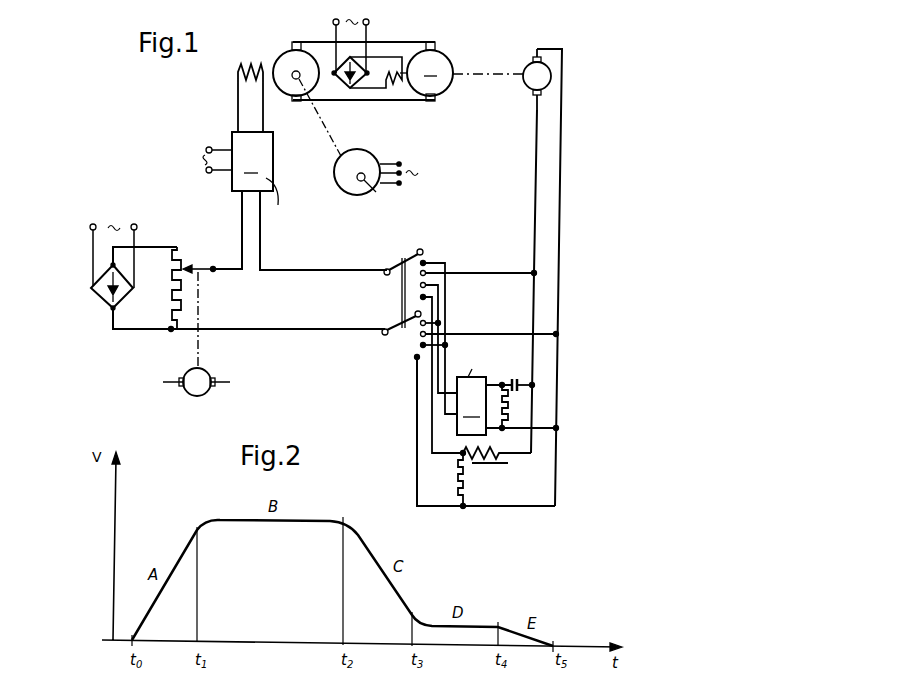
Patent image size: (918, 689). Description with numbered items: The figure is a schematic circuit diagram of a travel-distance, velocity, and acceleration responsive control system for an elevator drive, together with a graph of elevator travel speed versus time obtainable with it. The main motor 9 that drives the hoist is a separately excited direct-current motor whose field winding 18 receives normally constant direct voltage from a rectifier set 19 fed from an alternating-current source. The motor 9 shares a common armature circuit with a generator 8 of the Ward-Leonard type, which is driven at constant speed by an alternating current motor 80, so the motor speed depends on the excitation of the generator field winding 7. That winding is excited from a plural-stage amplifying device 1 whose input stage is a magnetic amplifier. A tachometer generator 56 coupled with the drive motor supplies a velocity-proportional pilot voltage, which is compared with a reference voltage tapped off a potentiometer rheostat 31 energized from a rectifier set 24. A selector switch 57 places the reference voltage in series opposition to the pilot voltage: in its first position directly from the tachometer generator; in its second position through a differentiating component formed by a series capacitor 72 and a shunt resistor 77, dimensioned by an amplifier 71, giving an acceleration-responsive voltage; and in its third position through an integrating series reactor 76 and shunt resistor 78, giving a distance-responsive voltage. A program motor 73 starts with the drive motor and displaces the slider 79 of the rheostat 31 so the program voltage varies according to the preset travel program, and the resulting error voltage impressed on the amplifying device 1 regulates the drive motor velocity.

The amplifying device 1 is at (263, 185).
The field winding 7 is at (238, 70).
The generator 8 is at (279, 58).
The main motor 9 is at (446, 62).
The field winding 18 is at (395, 84).
The rectifier set 19 is at (355, 82).
The rectifier set 24 is at (98, 293).
The potentiometer rheostat 31 is at (171, 306).
The tachometer generator 56 is at (525, 65).
The selector switch 57 is at (402, 300).
The amplifier 71 is at (471, 394).
The series capacitor 72 is at (519, 377).
The program motor 73 is at (186, 371).
The series reactor 76 is at (500, 442).
The shunt resistor 77 is at (508, 409).
The shunt resistor 78 is at (467, 488).
The slider 79 is at (188, 266).
The alternating current motor 80 is at (335, 167).